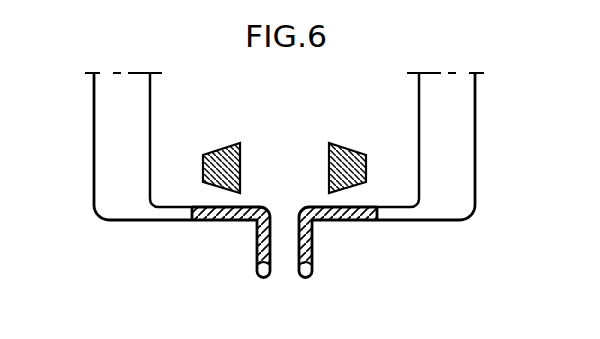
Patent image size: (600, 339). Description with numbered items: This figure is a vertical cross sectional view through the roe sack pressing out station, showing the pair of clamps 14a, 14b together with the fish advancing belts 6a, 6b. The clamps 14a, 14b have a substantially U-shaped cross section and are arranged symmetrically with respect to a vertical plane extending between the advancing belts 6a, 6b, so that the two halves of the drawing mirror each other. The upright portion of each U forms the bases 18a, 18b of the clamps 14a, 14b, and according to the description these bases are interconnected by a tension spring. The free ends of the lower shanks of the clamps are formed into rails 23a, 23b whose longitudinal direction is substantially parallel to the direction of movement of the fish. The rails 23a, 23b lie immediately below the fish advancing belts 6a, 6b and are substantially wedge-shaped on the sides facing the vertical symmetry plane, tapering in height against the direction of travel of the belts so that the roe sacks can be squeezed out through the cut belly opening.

The clamp 14a is at (94, 128).
The clamp 14b is at (475, 127).
The base 18a is at (136, 98).
The base 18b is at (425, 98).
The fish advancing belt 6a is at (217, 143).
The fish advancing belt 6b is at (362, 133).
The rail 23a is at (257, 252).
The rail 23b is at (312, 262).